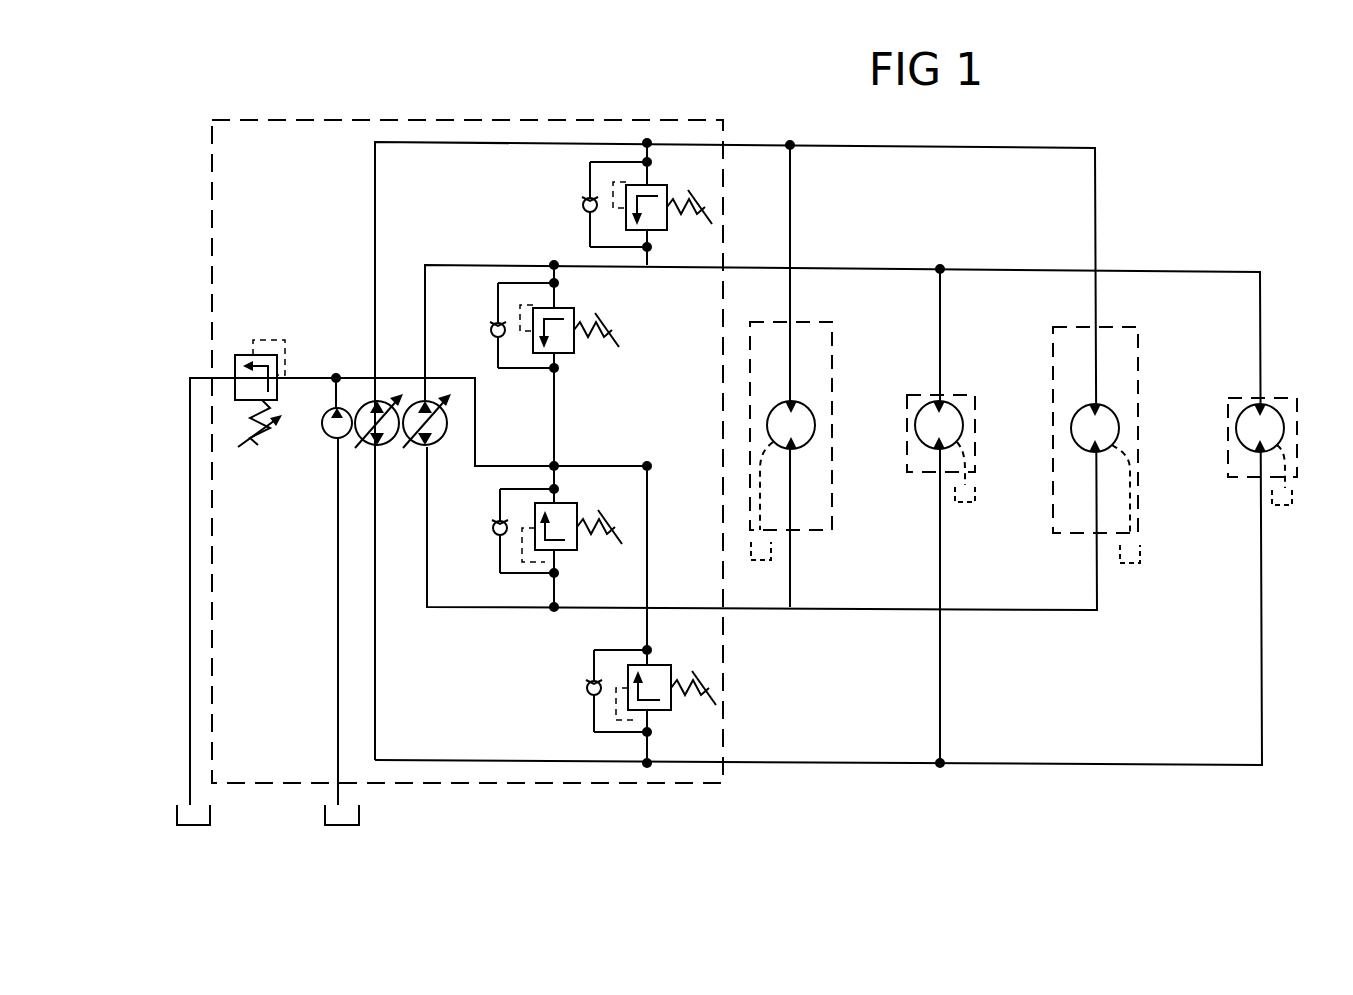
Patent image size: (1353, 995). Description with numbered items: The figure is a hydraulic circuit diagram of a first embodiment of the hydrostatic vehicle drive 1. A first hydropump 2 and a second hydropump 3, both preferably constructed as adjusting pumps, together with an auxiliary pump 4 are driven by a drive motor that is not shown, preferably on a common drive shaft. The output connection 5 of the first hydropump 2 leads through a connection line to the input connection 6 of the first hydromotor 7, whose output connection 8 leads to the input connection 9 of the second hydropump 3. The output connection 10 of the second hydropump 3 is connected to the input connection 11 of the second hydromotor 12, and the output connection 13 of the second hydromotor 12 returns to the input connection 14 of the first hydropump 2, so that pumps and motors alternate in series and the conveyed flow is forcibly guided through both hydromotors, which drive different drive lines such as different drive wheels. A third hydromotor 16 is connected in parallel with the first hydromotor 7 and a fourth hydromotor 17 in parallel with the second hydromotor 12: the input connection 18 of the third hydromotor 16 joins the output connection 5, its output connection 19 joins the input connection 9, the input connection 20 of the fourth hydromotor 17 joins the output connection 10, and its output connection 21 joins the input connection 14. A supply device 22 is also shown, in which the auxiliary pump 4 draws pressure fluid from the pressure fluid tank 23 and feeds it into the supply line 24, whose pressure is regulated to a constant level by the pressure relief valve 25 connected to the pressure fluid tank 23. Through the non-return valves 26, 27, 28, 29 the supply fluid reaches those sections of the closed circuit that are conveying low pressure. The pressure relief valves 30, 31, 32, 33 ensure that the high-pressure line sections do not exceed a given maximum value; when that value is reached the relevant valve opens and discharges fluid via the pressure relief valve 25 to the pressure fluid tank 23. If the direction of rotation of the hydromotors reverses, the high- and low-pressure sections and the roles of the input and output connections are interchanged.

The hydrostatic vehicle drive 1 is at (1152, 198).
The first hydropump 2 is at (375, 408).
The second hydropump 3 is at (444, 421).
The auxiliary pump 4 is at (330, 435).
The output connection 5 is at (375, 400).
The input connection 6 is at (794, 402).
The first hydromotor 7 is at (804, 441).
The output connection 8 is at (797, 447).
The input connection 9 is at (430, 447).
The output connection 10 is at (425, 400).
The input connection 11 is at (938, 402).
The second hydromotor 12 is at (961, 427).
The output connection 13 is at (938, 450).
The input connection 14 is at (374, 447).
The third hydromotor 16 is at (1117, 445).
The fourth hydromotor 17 is at (1283, 434).
The input connection 18 is at (1098, 405).
The output connection 19 is at (1101, 450).
The input connection 20 is at (1258, 405).
The output connection 21 is at (1258, 452).
The supply device 22 is at (268, 472).
The pressure fluid tank 23 is at (193, 826).
The supply line 24 is at (583, 466).
The pressure relief valve 25 is at (245, 372).
The non-return valve 26 is at (493, 325).
The non-return valve 27 is at (497, 537).
The non-return valve 28 is at (583, 205).
The non-return valve 29 is at (587, 688).
The pressure relief valve 30 is at (534, 363).
The pressure relief valve 31 is at (539, 538).
The pressure relief valve 32 is at (611, 169).
The pressure relief valve 33 is at (617, 648).